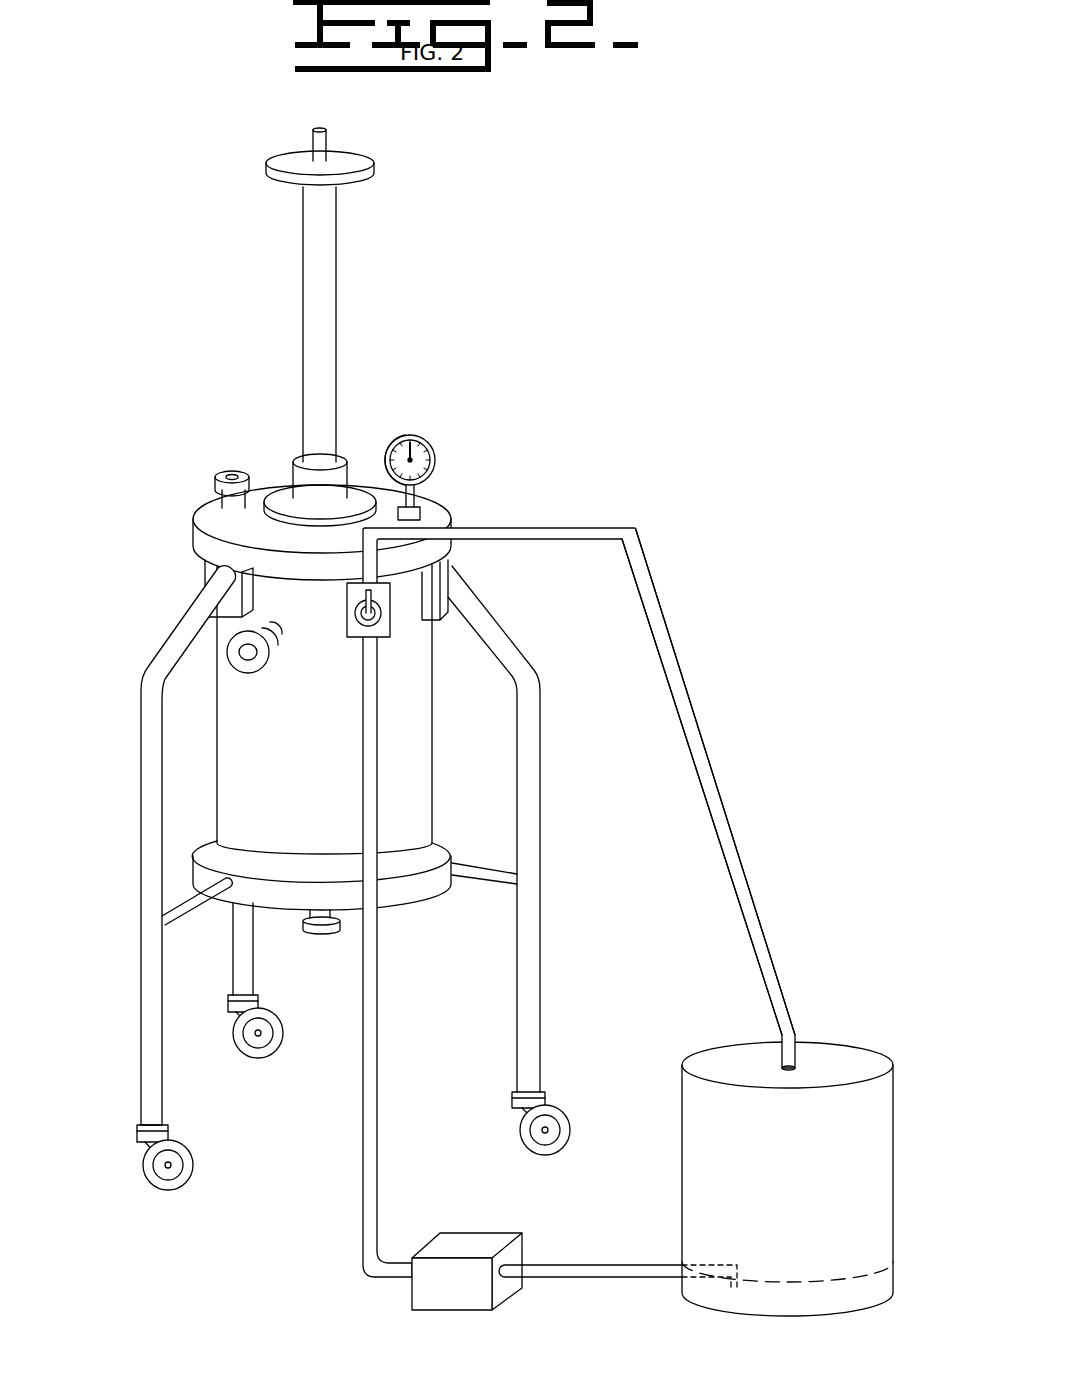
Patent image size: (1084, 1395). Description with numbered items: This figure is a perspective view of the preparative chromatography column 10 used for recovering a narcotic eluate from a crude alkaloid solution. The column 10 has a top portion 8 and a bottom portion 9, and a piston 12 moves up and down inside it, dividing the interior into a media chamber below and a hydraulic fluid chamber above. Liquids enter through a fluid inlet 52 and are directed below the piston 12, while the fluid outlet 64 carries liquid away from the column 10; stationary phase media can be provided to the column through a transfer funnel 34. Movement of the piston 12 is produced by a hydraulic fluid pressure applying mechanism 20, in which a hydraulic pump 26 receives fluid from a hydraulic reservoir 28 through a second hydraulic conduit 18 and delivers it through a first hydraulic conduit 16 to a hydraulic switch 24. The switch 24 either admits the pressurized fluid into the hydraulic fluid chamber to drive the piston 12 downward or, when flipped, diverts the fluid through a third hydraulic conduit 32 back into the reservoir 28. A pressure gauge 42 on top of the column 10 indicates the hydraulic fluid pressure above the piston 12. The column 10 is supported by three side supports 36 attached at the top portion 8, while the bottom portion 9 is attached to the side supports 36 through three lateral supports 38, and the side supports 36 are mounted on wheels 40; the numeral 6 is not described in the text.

The frame 6 is at (150, 990).
The top portion 8 is at (202, 565).
The bottom portion 9 is at (272, 737).
The preparative chromatography column 10 is at (299, 719).
The piston 12 is at (307, 313).
The first hydraulic conduit 16 is at (378, 1005).
The second hydraulic conduit 18 is at (640, 1270).
The hydraulic fluid pressure applying mechanism 20 is at (818, 1022).
The hydraulic switch 24 is at (392, 632).
The hydraulic pump 26 is at (439, 1303).
The hydraulic reservoir 28 is at (770, 1185).
The third hydraulic conduit 32 is at (695, 717).
The transfer funnel 34 is at (245, 668).
The side supports 36 is at (541, 905).
The lateral supports 38 is at (172, 920).
The wheels 40 is at (266, 1052).
The pressure gauge 42 is at (433, 452).
The fluid inlet 52 is at (226, 468).
The fluid outlet 64 is at (322, 934).